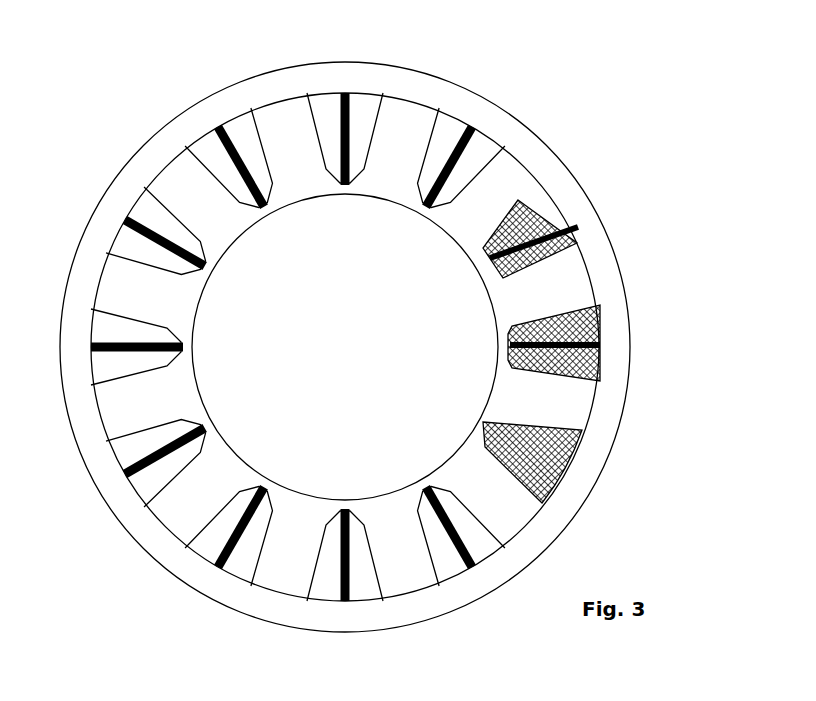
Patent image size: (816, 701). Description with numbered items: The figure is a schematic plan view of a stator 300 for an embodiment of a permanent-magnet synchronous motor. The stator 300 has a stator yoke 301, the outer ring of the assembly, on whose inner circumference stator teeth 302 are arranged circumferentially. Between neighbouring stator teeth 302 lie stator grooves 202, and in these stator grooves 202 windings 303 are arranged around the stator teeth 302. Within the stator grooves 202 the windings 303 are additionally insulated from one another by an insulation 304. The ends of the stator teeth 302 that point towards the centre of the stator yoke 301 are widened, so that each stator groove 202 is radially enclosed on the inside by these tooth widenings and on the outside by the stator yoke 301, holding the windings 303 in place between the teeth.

The stator 300 is at (398, 328).
The stator yoke 301 is at (463, 108).
The stator teeth 302 is at (477, 225).
The windings 303 is at (599, 311).
The insulation 304 is at (346, 108).
The stator grooves 202 is at (520, 193).